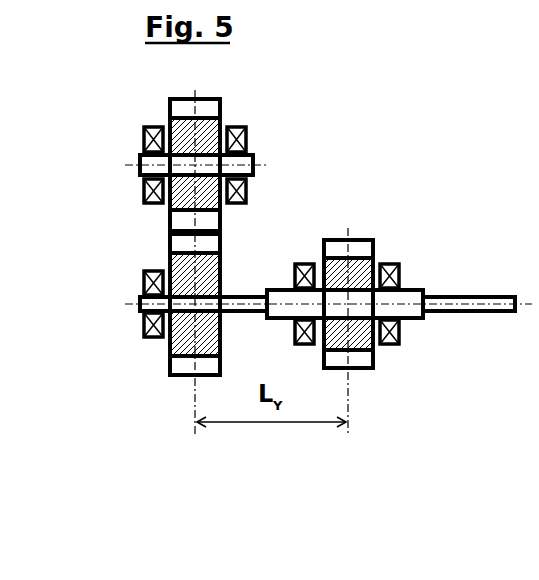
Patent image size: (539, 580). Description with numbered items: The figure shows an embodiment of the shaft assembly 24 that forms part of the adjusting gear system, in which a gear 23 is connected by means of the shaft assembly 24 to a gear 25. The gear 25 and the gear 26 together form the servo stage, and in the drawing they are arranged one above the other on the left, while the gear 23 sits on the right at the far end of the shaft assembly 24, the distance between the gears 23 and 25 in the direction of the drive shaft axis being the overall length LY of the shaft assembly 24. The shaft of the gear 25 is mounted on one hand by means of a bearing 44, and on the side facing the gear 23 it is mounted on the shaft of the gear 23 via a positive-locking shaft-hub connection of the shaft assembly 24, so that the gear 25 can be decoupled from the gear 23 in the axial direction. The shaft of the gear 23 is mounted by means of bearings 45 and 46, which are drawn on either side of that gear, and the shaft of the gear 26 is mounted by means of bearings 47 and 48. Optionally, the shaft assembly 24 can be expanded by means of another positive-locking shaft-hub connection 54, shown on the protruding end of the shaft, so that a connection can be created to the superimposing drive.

The gear 23 is at (348, 242).
The shaft assembly 24 is at (266, 286).
The gear 25 is at (167, 244).
The gear 26 is at (167, 110).
The bearing 44 is at (142, 282).
The bearing 45 is at (304, 265).
The bearing 46 is at (392, 265).
The bearing 47 is at (142, 133).
The bearing 48 is at (248, 132).
The positive-locking shaft-hub connection 54 is at (423, 314).